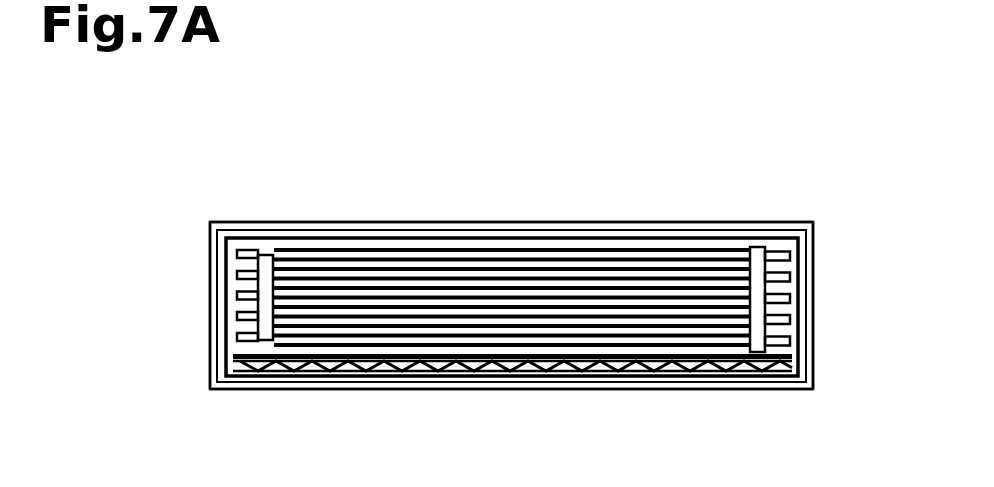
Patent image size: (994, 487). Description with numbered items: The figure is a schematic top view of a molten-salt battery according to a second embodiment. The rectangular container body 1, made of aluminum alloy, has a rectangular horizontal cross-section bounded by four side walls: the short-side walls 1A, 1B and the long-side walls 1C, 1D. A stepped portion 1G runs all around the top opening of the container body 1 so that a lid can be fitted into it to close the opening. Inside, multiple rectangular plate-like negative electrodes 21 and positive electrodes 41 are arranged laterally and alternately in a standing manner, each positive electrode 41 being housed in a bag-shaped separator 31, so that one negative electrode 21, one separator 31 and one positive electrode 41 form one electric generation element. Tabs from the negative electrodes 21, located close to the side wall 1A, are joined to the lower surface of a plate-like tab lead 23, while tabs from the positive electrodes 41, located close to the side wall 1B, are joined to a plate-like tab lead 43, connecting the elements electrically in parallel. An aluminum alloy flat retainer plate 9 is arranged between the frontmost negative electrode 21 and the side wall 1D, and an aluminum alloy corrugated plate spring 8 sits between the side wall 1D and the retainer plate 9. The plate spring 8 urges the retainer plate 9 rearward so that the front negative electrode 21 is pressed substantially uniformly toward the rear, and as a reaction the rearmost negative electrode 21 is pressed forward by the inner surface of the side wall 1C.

The container body 1 is at (538, 388).
The side wall 1A is at (814, 357).
The side wall 1B is at (209, 344).
The side wall 1C is at (524, 221).
The side wall 1D is at (428, 390).
The stepped portion 1G is at (630, 237).
The corrugated plate spring 8 is at (706, 373).
The retainer plate 9 is at (741, 360).
The negative electrode 21 is at (791, 256).
The tab lead 23 is at (755, 246).
The separator 31 is at (369, 252).
The positive electrode 41 is at (237, 337).
The tab lead 43 is at (264, 254).